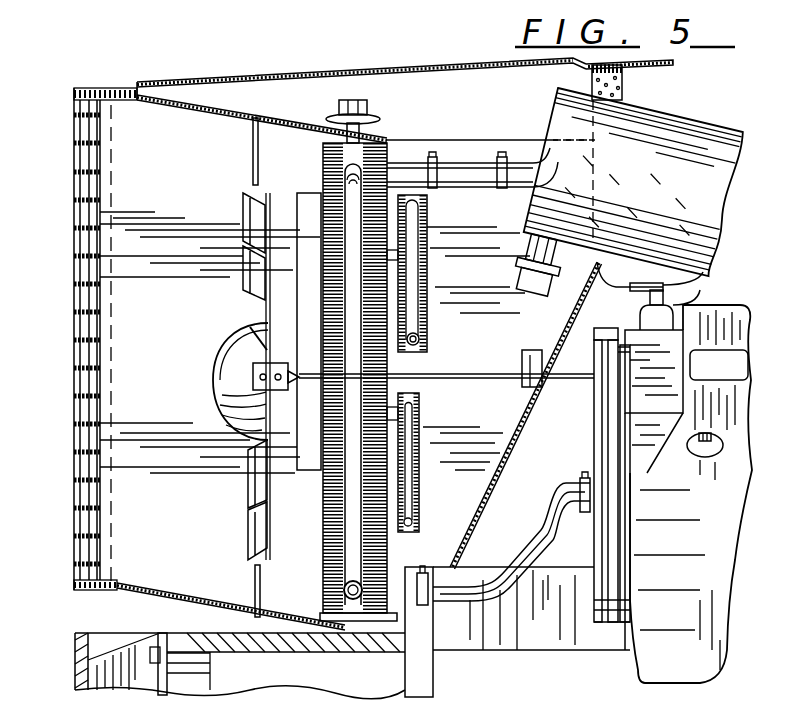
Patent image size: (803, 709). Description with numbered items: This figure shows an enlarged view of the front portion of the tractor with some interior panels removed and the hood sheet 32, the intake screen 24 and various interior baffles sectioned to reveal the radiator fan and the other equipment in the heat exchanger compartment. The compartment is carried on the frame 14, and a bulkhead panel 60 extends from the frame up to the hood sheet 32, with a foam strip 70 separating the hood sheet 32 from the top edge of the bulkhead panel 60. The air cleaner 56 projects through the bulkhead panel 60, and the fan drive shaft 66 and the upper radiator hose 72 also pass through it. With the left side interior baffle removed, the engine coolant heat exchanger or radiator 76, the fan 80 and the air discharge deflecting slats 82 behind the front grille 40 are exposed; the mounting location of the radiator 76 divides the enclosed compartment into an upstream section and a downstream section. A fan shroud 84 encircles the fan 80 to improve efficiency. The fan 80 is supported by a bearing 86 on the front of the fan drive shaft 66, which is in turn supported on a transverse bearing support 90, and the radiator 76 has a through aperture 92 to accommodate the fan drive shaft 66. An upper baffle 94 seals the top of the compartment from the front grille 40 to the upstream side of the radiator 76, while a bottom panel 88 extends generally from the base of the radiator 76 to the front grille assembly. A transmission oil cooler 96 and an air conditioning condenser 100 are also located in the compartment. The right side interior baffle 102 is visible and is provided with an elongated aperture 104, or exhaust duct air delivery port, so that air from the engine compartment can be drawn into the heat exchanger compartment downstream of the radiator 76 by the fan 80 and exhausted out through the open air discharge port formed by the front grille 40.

The frame 14 is at (462, 627).
The intake screen 24 is at (313, 72).
The hood sheet 32 is at (668, 62).
The front grille 40 is at (76, 143).
The air cleaner 56 is at (688, 122).
The bulkhead panel 60 is at (622, 263).
The fan drive shaft 66 is at (474, 378).
The foam strip 70 is at (624, 72).
The upper radiator hose 72 is at (540, 162).
The radiator 76 is at (370, 163).
The fan 80 is at (240, 268).
The air discharge deflecting slats 82 is at (80, 232).
The fan shroud 84 is at (258, 150).
The bearing 86 is at (245, 348).
The bottom panel 88 is at (155, 593).
The transverse bearing support 90 is at (262, 385).
The through aperture 92 is at (412, 375).
The upper baffle 94 is at (203, 108).
The transmission oil cooler 96 is at (425, 337).
The air conditioning condenser 100 is at (420, 512).
The right side interior baffle 102 is at (316, 563).
The elongated aperture 104 is at (308, 456).